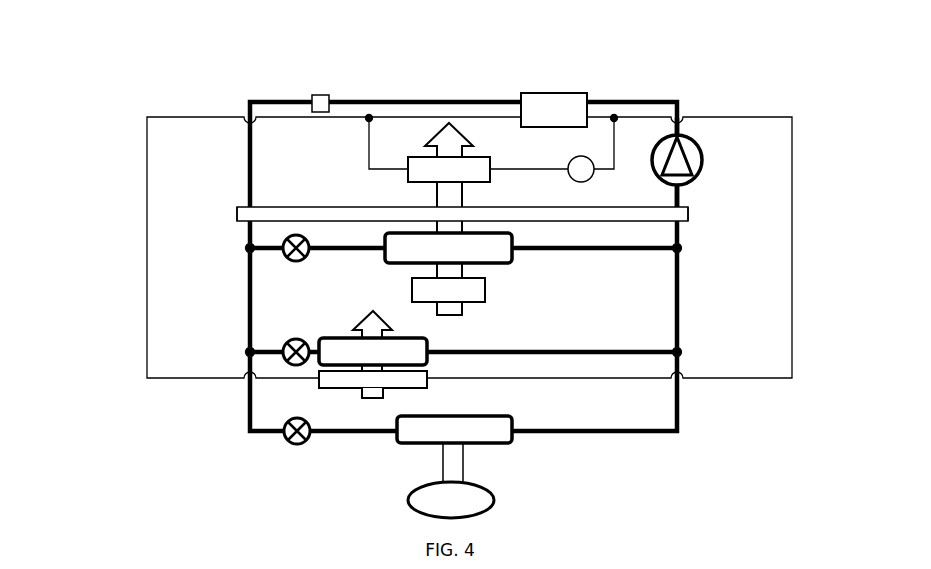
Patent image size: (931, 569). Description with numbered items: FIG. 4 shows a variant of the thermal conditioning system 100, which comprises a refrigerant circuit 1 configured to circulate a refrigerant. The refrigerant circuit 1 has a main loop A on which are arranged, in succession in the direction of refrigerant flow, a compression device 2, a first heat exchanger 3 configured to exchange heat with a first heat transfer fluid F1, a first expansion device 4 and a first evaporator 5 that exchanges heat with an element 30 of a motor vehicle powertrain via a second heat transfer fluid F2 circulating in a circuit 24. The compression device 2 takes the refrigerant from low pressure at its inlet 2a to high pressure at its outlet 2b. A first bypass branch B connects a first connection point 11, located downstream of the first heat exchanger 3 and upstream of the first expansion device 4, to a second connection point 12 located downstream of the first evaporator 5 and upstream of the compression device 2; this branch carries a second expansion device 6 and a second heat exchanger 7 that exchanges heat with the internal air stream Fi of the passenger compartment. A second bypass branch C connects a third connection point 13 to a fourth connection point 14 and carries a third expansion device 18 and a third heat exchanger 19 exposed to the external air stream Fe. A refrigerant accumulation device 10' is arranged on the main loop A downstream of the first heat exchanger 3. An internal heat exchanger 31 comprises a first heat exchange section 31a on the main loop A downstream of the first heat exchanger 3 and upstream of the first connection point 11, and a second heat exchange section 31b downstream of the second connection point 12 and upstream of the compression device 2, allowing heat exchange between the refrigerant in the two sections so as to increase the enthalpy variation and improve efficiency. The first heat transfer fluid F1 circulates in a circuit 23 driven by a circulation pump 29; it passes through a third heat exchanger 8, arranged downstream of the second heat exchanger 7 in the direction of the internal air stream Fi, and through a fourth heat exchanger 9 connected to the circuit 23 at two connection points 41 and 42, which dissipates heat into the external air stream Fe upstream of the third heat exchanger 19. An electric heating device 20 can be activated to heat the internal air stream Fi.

The thermal conditioning system 100 is at (404, 77).
The refrigerant circuit 1 is at (688, 394).
The compression device 2 is at (675, 161).
The inlet 2a is at (680, 188).
The outlet 2b is at (680, 135).
The first heat exchanger 3 is at (545, 108).
The first expansion device 4 is at (297, 439).
The first evaporator 5 is at (490, 425).
The second expansion device 6 is at (302, 250).
The second heat exchanger 7 is at (490, 248).
The third heat exchanger 8 is at (470, 176).
The fourth heat exchanger 9 is at (410, 376).
The refrigerant accumulation device 10' is at (286, 95).
The first connection point 11 is at (247, 249).
The second connection point 12 is at (681, 249).
The third connection point 13 is at (247, 352).
The fourth connection point 14 is at (681, 352).
The third expansion device 18 is at (295, 343).
The third heat exchanger 19 is at (410, 346).
The electric heating device 20 is at (425, 290).
The circuit 23 is at (147, 238).
The circuit 24 is at (441, 470).
The circulation pump 29 is at (582, 172).
The element of a powertrain 30 is at (480, 500).
The internal heat exchanger 31 is at (360, 213).
The first heat exchange section 31a is at (237, 214).
The second heat exchange section 31b is at (675, 215).
The connection point 41 is at (612, 120).
The connection point 42 is at (372, 121).
The main loop A is at (249, 154).
The first bypass branch B is at (565, 248).
The second bypass branch C is at (562, 352).
The first heat transfer fluid F1 is at (485, 119).
The second heat transfer fluid F2 is at (465, 462).
The internal air stream Fi is at (447, 191).
The external air stream Fe is at (372, 326).